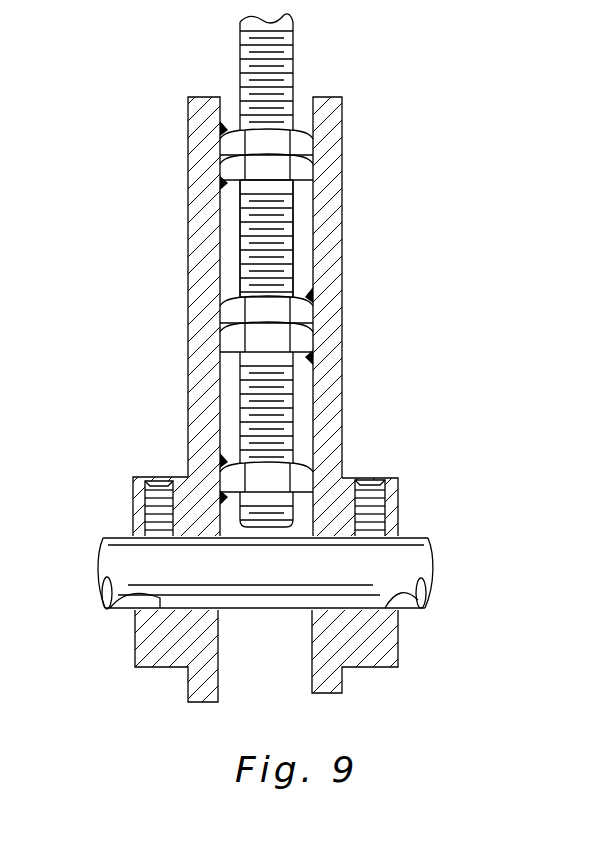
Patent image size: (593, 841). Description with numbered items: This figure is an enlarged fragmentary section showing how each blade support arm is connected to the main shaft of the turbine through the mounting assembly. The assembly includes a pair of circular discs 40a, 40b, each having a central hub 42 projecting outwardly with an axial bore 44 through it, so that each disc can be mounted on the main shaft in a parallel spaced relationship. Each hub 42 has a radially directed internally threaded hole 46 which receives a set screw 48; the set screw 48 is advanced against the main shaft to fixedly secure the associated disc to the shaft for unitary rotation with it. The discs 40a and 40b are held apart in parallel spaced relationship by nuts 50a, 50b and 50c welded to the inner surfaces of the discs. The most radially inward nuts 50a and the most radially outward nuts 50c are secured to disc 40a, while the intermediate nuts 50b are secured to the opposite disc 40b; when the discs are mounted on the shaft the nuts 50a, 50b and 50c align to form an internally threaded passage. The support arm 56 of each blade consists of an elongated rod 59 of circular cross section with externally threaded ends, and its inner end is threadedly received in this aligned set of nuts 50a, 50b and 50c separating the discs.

The support arm 56 is at (268, 60).
The elongated rod 59 is at (273, 267).
The nut 50a is at (300, 478).
The nut 50b is at (308, 311).
The nut 50c is at (303, 143).
The circular disc 40a is at (197, 337).
The circular disc 40b is at (327, 385).
The internally threaded hole 46 is at (153, 480).
The set screw 48 is at (162, 482).
The axial bore 44 is at (110, 597).
The central hub 42 is at (160, 640).